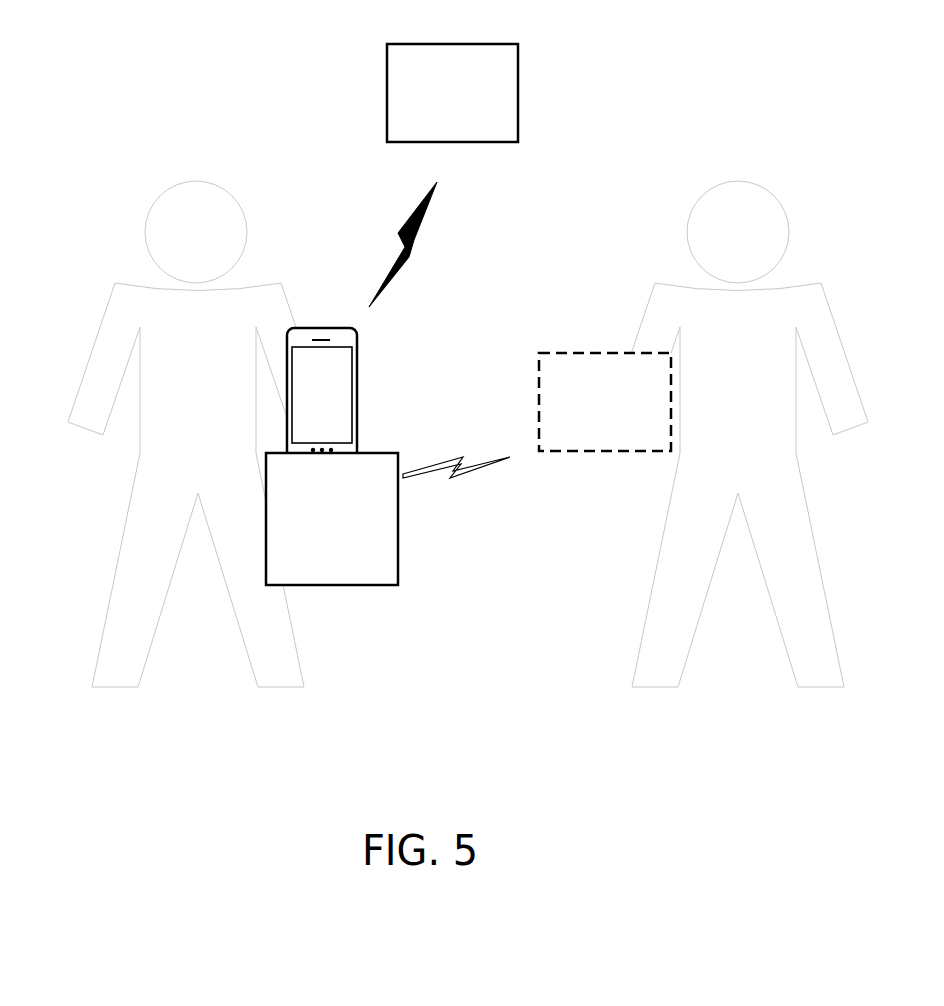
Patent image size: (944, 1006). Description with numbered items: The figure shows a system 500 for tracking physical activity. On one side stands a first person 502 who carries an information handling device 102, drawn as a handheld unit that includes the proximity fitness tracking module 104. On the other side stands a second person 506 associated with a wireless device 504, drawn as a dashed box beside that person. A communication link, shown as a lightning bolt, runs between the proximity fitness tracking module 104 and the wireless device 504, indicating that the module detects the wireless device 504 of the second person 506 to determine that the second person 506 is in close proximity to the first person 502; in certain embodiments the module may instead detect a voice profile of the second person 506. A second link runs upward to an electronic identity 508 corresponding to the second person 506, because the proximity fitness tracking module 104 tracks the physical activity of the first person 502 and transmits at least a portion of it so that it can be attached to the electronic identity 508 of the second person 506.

The system 500 is at (108, 66).
The first person 502 is at (128, 520).
The second person 506 is at (669, 522).
The information handling device 102 is at (357, 393).
The proximity fitness tracking module 104 is at (313, 581).
The electronic identity 508 is at (434, 129).
The wireless device 504 is at (586, 439).